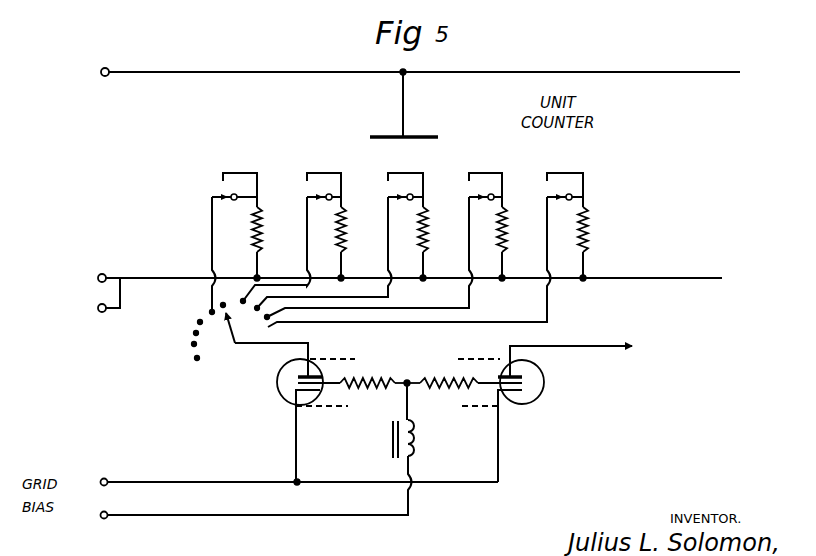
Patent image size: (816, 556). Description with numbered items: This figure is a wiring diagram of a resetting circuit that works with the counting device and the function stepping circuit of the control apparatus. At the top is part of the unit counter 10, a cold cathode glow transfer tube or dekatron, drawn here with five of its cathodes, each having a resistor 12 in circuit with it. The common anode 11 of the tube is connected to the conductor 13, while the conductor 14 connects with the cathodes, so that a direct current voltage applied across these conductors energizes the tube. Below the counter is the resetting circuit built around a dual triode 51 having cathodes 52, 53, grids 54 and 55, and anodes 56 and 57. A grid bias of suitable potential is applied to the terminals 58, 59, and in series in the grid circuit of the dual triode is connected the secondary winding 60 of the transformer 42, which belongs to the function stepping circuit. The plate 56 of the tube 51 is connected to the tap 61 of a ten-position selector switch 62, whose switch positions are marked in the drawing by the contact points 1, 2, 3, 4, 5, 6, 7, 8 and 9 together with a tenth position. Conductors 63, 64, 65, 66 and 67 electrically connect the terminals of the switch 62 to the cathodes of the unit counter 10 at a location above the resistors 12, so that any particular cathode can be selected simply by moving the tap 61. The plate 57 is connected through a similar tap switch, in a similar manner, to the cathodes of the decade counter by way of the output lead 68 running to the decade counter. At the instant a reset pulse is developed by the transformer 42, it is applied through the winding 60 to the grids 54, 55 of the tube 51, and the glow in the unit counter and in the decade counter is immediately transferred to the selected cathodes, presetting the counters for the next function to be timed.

The switch contact 1 is at (268, 311).
The switch contact 2 is at (253, 302).
The switch contact 3 is at (239, 296).
The switch contact 4 is at (220, 299).
The switch contact 5 is at (205, 306).
The switch contact 6 is at (193, 318).
The switch contact 7 is at (189, 333).
The switch contact 8 is at (187, 345).
The switch contact 9 is at (189, 360).
The unit counter 10 is at (200, 133).
The common anode 11 is at (384, 135).
The resistor 12 is at (586, 229).
The conductor 13 is at (706, 74).
The conductor 14 is at (665, 277).
The transformer 42 is at (386, 447).
The dual triode 51 is at (485, 412).
The cathode 52 is at (286, 376).
The cathode 53 is at (516, 398).
The grid 54 is at (297, 408).
The grid 55 is at (529, 408).
The anode 56 is at (312, 378).
The anode 57 is at (504, 373).
The terminal 58 is at (102, 478).
The terminal 59 is at (101, 519).
The secondary winding 60 is at (419, 444).
The tap 61 is at (232, 346).
The ten-position selector switch 62 is at (195, 329).
The conductor 63 is at (211, 233).
The conductor 64 is at (306, 240).
The conductor 65 is at (387, 241).
The conductor 66 is at (468, 241).
The conductor 67 is at (546, 241).
The output lead to decade counter 68 is at (582, 345).